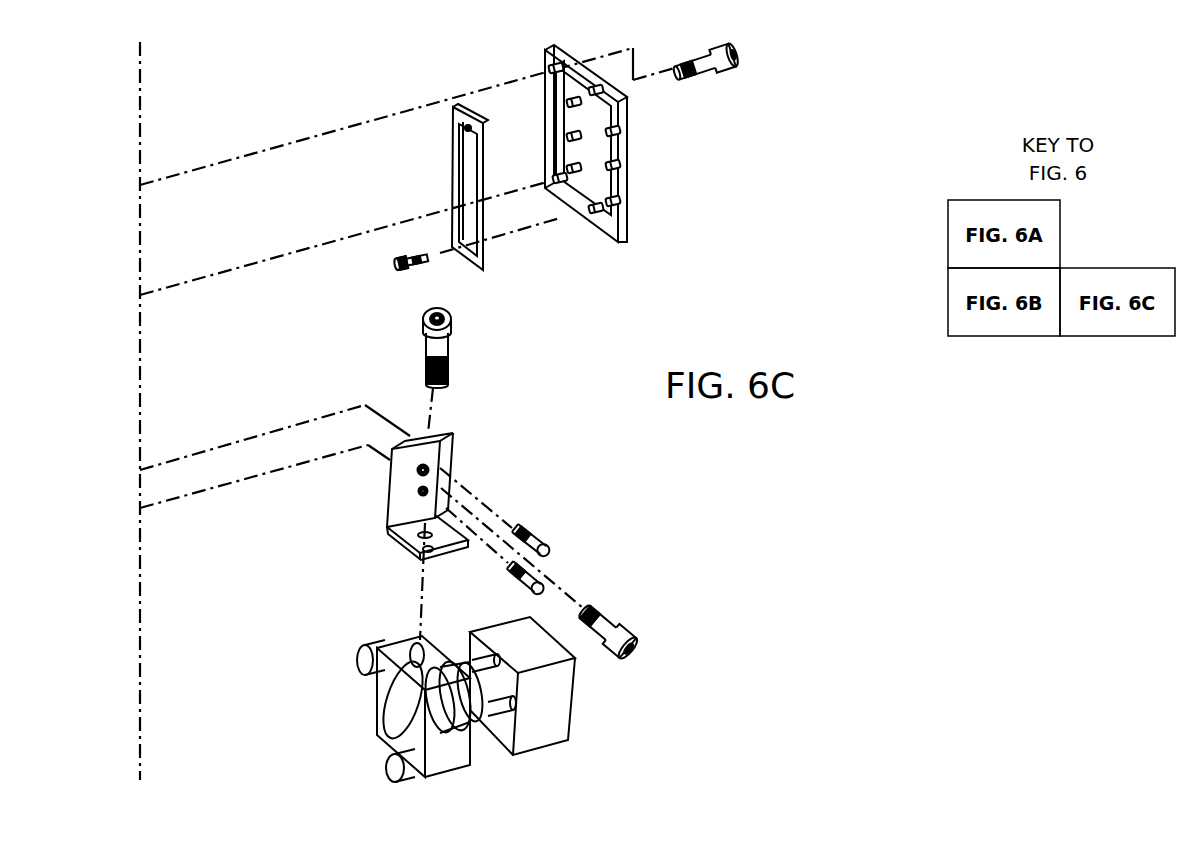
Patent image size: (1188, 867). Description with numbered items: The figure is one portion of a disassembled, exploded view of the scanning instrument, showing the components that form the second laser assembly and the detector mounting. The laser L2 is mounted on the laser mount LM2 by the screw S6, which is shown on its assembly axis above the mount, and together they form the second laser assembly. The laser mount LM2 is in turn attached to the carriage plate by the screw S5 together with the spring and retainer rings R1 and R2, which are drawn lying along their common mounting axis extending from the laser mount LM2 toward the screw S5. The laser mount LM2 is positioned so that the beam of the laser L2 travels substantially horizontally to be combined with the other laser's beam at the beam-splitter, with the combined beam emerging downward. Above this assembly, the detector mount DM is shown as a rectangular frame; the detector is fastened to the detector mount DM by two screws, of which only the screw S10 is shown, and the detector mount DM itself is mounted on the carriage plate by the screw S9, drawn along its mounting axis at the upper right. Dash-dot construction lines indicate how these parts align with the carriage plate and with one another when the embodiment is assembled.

The detector mount DM is at (628, 183).
The screw S9 is at (734, 52).
The screw S10 is at (392, 266).
The screw S6 is at (452, 322).
The laser mount LM2 is at (390, 499).
The spring and retainer ring R2 is at (523, 528).
The spring and retainer ring R1 is at (518, 582).
The screw S5 is at (612, 615).
The laser L2 is at (350, 720).